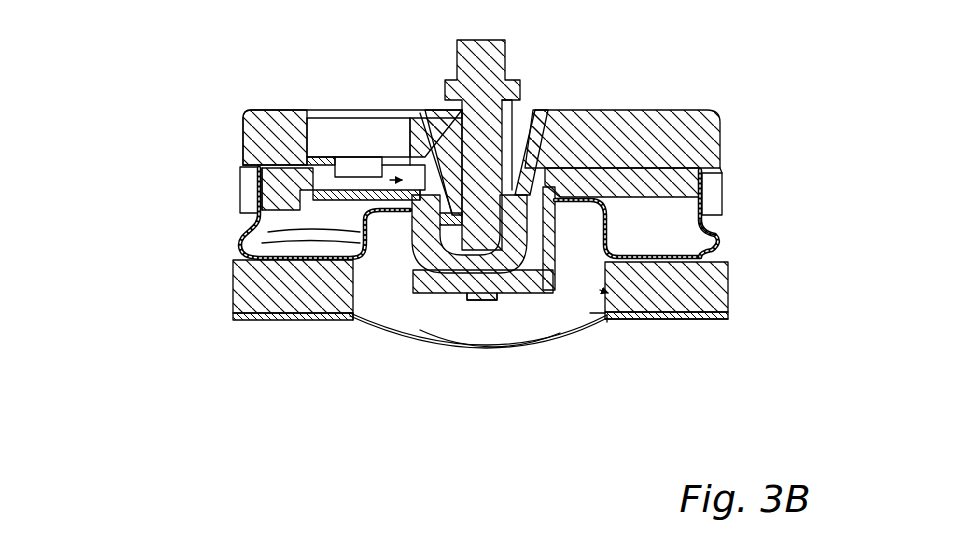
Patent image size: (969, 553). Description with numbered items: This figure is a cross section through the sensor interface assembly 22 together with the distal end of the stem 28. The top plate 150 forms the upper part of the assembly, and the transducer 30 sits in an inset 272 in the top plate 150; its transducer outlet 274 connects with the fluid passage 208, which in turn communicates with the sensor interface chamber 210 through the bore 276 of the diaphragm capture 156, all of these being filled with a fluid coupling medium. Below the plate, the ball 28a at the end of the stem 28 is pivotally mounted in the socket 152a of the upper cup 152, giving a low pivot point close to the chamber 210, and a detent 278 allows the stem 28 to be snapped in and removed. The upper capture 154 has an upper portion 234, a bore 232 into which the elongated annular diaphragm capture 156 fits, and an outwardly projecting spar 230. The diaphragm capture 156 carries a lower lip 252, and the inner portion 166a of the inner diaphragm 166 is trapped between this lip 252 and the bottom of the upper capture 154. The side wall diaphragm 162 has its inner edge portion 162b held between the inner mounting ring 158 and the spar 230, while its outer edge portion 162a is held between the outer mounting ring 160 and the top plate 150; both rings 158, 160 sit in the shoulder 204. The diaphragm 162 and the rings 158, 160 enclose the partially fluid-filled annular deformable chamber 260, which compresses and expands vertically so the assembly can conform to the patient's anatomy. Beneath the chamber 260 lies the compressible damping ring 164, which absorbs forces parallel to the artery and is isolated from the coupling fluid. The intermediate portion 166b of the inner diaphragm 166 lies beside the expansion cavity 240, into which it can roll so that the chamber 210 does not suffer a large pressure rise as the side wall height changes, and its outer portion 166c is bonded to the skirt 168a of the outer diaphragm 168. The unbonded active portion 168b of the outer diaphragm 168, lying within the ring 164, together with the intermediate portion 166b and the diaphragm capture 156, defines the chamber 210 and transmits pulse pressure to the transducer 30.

The sensor interface assembly 22 is at (172, 414).
The stem 28 is at (487, 40).
The stem bulge 28a is at (240, 243).
The transducer 30 is at (318, 118).
The top plate 150 is at (703, 117).
The upper cup 152 is at (440, 117).
The socket 152a is at (418, 300).
The upper capture 154 is at (560, 300).
The diaphragm capture 156 is at (525, 296).
The inner mounting ring 158 is at (680, 170).
The outer mounting ring 160 is at (713, 203).
The side wall diaphragm 162 is at (723, 240).
The outer edge portion 162a is at (718, 185).
The inner edge portion 162b is at (258, 196).
The damping ring 164 is at (718, 280).
The inner diaphragm 166 is at (597, 323).
The inner portion 166a is at (353, 318).
The intermediate portion 166b is at (598, 330).
The outer portion 166c is at (728, 317).
The outer diaphragm 168 is at (377, 318).
The skirt 168a is at (690, 330).
The active portion 168b is at (503, 343).
The shoulder 204 is at (703, 177).
The fluid passage 208 is at (353, 167).
The sensor interface chamber 210 is at (487, 348).
The spar 230 is at (690, 319).
The bore 232 is at (567, 300).
The upper portion 234 is at (548, 190).
The expansion cavity 240 is at (383, 230).
The lower lip 252 is at (400, 300).
The annular deformable chamber 260 is at (640, 240).
The inset 272 is at (422, 118).
The transducer outlet 274 is at (317, 130).
The bore 276 is at (473, 305).
The detent 278 is at (520, 193).